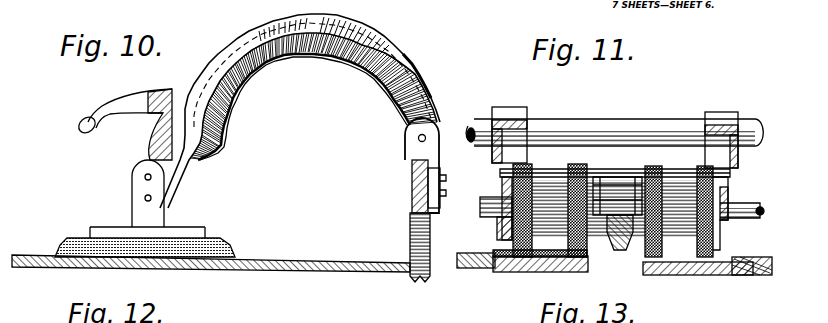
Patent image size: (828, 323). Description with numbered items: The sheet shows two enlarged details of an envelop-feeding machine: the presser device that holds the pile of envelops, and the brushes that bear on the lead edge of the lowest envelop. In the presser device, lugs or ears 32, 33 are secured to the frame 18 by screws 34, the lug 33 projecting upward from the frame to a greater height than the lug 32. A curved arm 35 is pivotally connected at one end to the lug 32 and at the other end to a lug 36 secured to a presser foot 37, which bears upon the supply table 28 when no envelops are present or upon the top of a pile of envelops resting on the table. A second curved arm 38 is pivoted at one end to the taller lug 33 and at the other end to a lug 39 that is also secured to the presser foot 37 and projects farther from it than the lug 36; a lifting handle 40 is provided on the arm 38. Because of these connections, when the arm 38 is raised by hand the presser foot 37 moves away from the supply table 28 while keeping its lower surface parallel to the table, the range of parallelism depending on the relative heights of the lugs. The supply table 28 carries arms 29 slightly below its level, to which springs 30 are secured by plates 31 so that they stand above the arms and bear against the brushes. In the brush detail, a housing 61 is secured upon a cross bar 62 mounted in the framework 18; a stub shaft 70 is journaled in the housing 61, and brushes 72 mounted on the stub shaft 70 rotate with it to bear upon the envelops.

In FIG. 10, the frame 18 is at (417, 247).
In FIG. 10, the supply table 28 is at (43, 264).
In FIG. 11, the arms 29 is at (548, 272).
In FIG. 11, the springs 30 is at (588, 250).
In FIG. 11, the plates 31 is at (470, 270).
In FIG. 10, the lug 32 is at (430, 150).
In FIG. 10, the lug 33 is at (433, 86).
In FIG. 10, the screws 34 is at (444, 190).
In FIG. 10, the curved arm 35 is at (305, 26).
In FIG. 10, the lug 36 is at (150, 212).
In FIG. 10, the presser foot 37 is at (73, 240).
In FIG. 10, the curved arm 38 is at (414, 70).
In FIG. 10, the lug 39 is at (144, 174).
In FIG. 10, the lifting handle 40 is at (126, 105).
In FIG. 11, the housing 61 is at (718, 120).
In FIG. 11, the cross bar 62 is at (598, 131).
In FIG. 11, the stub shaft 70 is at (744, 217).
In FIG. 11, the brushes 72 is at (579, 164).